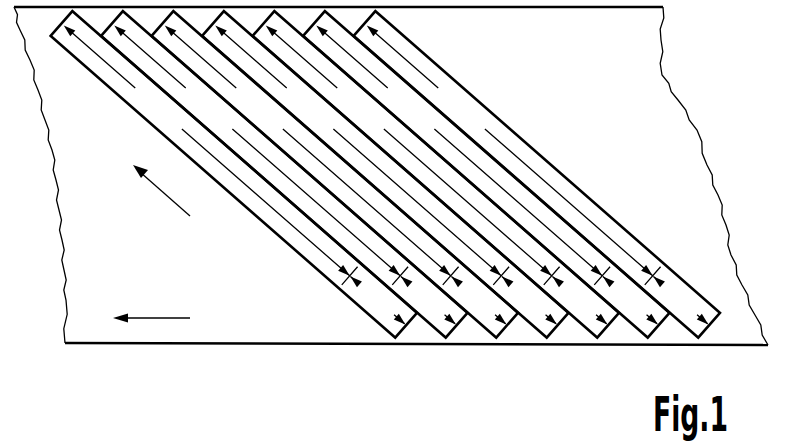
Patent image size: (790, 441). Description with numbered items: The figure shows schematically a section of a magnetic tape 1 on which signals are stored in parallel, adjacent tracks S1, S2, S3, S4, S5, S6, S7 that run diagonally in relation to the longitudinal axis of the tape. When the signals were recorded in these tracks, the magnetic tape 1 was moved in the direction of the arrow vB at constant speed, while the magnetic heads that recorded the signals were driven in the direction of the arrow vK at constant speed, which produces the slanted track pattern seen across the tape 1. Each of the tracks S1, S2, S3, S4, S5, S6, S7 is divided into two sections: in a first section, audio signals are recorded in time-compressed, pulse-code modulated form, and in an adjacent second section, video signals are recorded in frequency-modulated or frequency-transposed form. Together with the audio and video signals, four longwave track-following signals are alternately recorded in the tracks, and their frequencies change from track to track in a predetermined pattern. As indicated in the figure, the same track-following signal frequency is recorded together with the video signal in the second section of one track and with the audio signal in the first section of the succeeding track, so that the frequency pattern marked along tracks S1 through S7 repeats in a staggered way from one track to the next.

The magnetic tape 1 is at (241, 333).
The track S1 is at (401, 333).
The track S2 is at (451, 333).
The track S3 is at (502, 333).
The track S4 is at (552, 333).
The track S5 is at (603, 333).
The track S6 is at (653, 333).
The track S7 is at (704, 333).
The arrow of head movement direction vK is at (161, 191).
The arrow of tape movement direction vB is at (152, 316).